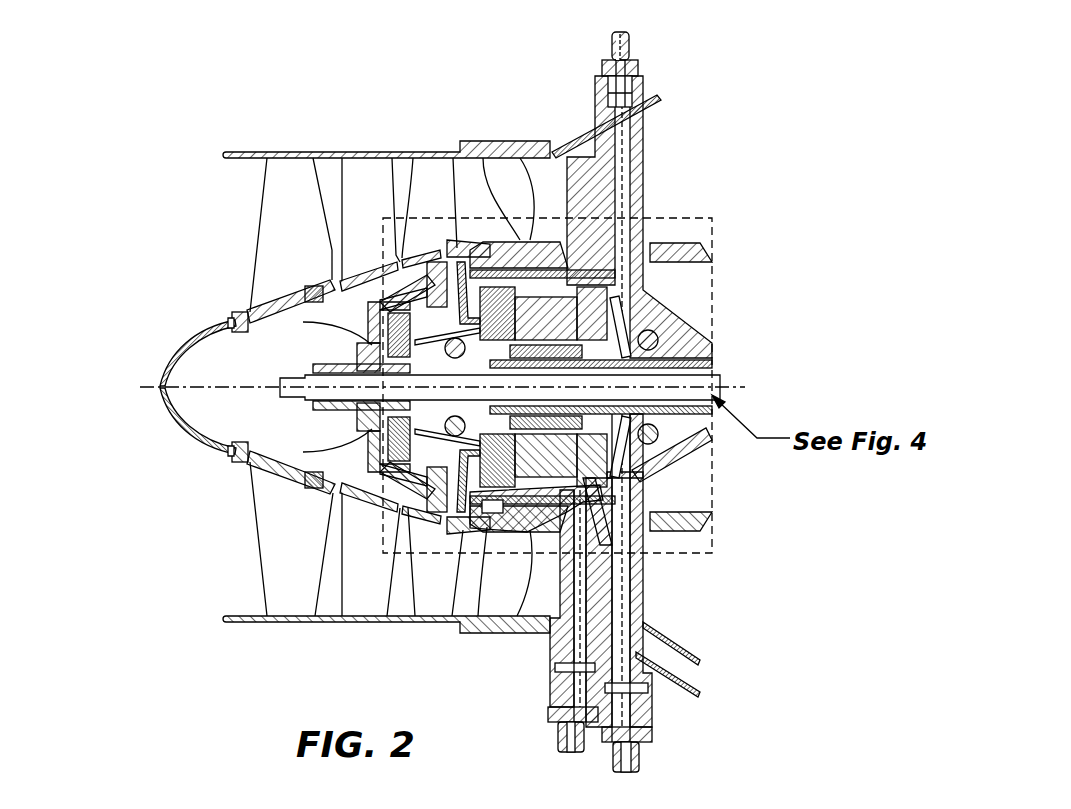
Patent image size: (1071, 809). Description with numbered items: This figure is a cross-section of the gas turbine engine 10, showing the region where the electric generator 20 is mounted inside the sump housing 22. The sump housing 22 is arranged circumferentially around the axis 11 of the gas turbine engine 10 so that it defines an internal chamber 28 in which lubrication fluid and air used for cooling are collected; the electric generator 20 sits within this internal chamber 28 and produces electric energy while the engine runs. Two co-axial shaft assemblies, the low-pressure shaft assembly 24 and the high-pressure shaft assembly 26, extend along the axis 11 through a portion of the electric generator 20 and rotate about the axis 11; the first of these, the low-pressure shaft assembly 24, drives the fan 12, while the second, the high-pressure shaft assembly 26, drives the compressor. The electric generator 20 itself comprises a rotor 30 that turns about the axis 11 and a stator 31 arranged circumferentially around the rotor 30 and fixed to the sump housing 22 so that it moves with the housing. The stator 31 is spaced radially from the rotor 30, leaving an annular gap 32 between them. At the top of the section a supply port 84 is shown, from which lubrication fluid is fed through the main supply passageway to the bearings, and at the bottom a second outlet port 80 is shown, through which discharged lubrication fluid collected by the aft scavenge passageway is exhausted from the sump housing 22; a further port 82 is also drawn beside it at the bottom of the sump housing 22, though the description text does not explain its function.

The gas turbine engine 10 is at (144, 134).
The axis 11 is at (176, 386).
The fan 12 is at (240, 213).
The electric generator 20 is at (632, 305).
The sump housing 22 is at (458, 274).
The low-pressure shaft assembly 24 is at (246, 320).
The high-pressure shaft assembly 26 is at (676, 434).
The internal chamber 28 is at (474, 436).
The rotor 30 is at (662, 375).
The stator 31 is at (604, 289).
The annular gap 32 is at (598, 340).
The second outlet port 80 is at (645, 772).
The lower mounting bolt 82 is at (550, 735).
The supply port 84 is at (640, 46).